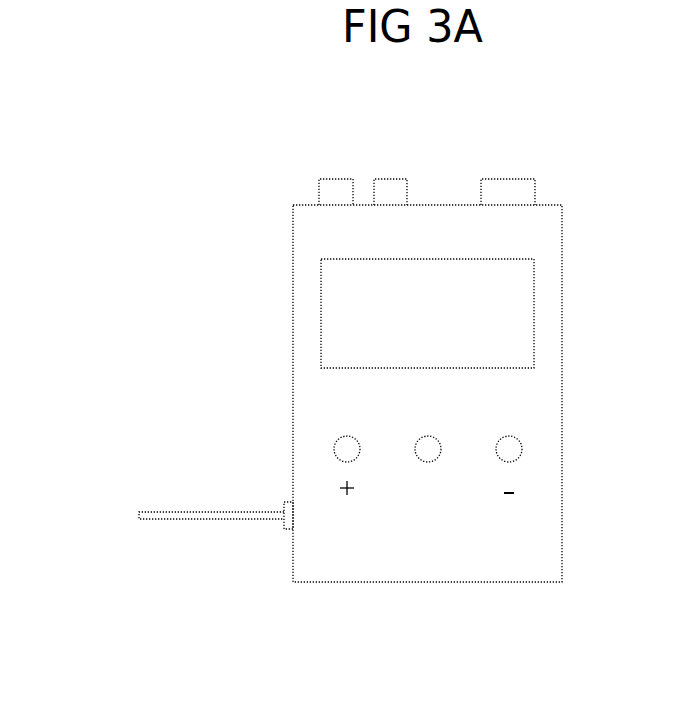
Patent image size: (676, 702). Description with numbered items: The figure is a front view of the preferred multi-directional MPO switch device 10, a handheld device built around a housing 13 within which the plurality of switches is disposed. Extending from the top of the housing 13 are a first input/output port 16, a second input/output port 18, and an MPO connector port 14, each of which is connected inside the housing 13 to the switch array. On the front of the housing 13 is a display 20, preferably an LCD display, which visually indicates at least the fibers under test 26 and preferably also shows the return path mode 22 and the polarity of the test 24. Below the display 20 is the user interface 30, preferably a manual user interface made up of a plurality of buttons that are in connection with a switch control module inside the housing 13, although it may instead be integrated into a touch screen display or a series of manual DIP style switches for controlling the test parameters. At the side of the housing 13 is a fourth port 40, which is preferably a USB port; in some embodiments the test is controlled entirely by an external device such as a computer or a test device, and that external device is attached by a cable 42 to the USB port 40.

The MPO switch device 10 is at (230, 172).
The housing 13 is at (538, 548).
The MPO connector port 14 is at (518, 188).
The first input/output port 16 is at (393, 190).
The second input/output port 18 is at (338, 197).
The display 20 is at (352, 343).
The return path mode 22 is at (327, 277).
The polarity of the test 24 is at (528, 273).
The fibers under test 26 is at (477, 326).
The user interface 30 is at (392, 488).
The fourth port 40 is at (284, 529).
The cable 42 is at (187, 512).